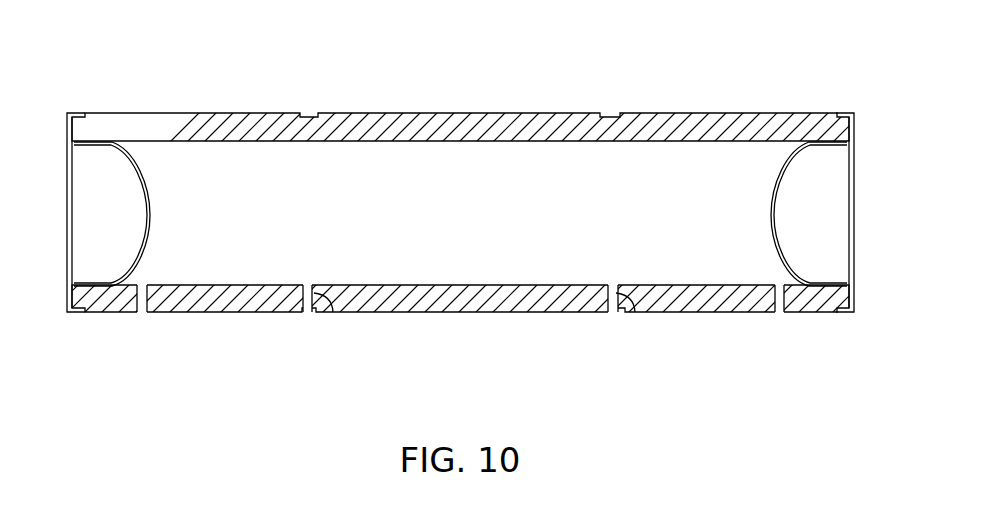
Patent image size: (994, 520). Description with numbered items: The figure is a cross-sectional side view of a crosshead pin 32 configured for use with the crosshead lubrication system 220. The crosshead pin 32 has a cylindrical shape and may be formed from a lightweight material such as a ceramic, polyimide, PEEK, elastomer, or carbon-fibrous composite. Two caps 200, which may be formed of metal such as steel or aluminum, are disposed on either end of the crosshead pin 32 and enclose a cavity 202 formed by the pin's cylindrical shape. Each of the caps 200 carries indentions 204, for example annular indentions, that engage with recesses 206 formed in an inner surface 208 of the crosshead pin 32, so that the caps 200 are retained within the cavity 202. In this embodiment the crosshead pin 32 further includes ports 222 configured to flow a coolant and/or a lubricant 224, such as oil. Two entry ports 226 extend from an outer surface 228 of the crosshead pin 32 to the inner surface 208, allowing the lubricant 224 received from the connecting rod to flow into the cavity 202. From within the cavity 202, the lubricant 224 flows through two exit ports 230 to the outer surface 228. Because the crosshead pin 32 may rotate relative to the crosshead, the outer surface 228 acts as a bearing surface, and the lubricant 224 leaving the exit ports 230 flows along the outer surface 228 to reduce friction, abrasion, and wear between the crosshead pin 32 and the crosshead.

The crosshead pin 32 is at (700, 60).
The caps 200 is at (460, 204).
The cavity 202 is at (442, 225).
The indentions 204 is at (92, 147).
The recesses 206 is at (72, 113).
The inner surface 208 is at (258, 142).
The crosshead lubrication system 220 is at (420, 380).
The ports 222 is at (185, 338).
The lubricant 224 is at (484, 275).
The entry ports 226 is at (333, 312).
The outer surface 228 is at (497, 216).
The exit ports 230 is at (142, 337).